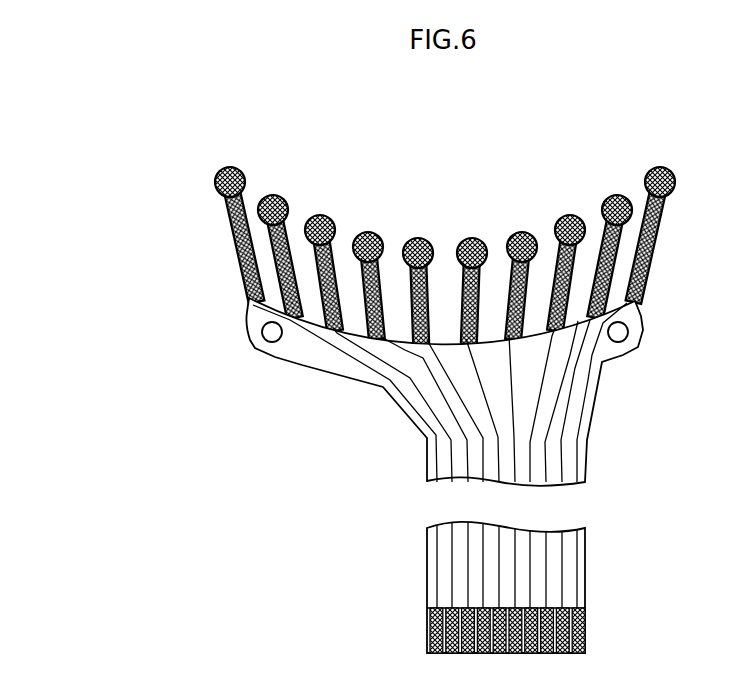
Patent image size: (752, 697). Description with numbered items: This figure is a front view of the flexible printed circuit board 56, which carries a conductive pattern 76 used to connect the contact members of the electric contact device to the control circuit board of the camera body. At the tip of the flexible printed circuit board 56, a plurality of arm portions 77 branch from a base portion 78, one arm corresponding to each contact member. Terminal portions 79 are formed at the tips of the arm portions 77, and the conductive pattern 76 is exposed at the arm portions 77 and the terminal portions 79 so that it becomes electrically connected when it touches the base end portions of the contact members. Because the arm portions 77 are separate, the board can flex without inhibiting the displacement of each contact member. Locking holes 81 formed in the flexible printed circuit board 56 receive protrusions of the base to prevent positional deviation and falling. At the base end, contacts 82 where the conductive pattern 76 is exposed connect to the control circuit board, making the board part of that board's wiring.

The flexible printed circuit board 56 is at (150, 181).
The conductive pattern 76 is at (437, 457).
The arm portions 77 is at (463, 287).
The base portion 78 is at (331, 367).
The terminal portions 79 is at (236, 168).
The locking holes 81 is at (271, 332).
The contacts 82 is at (437, 632).